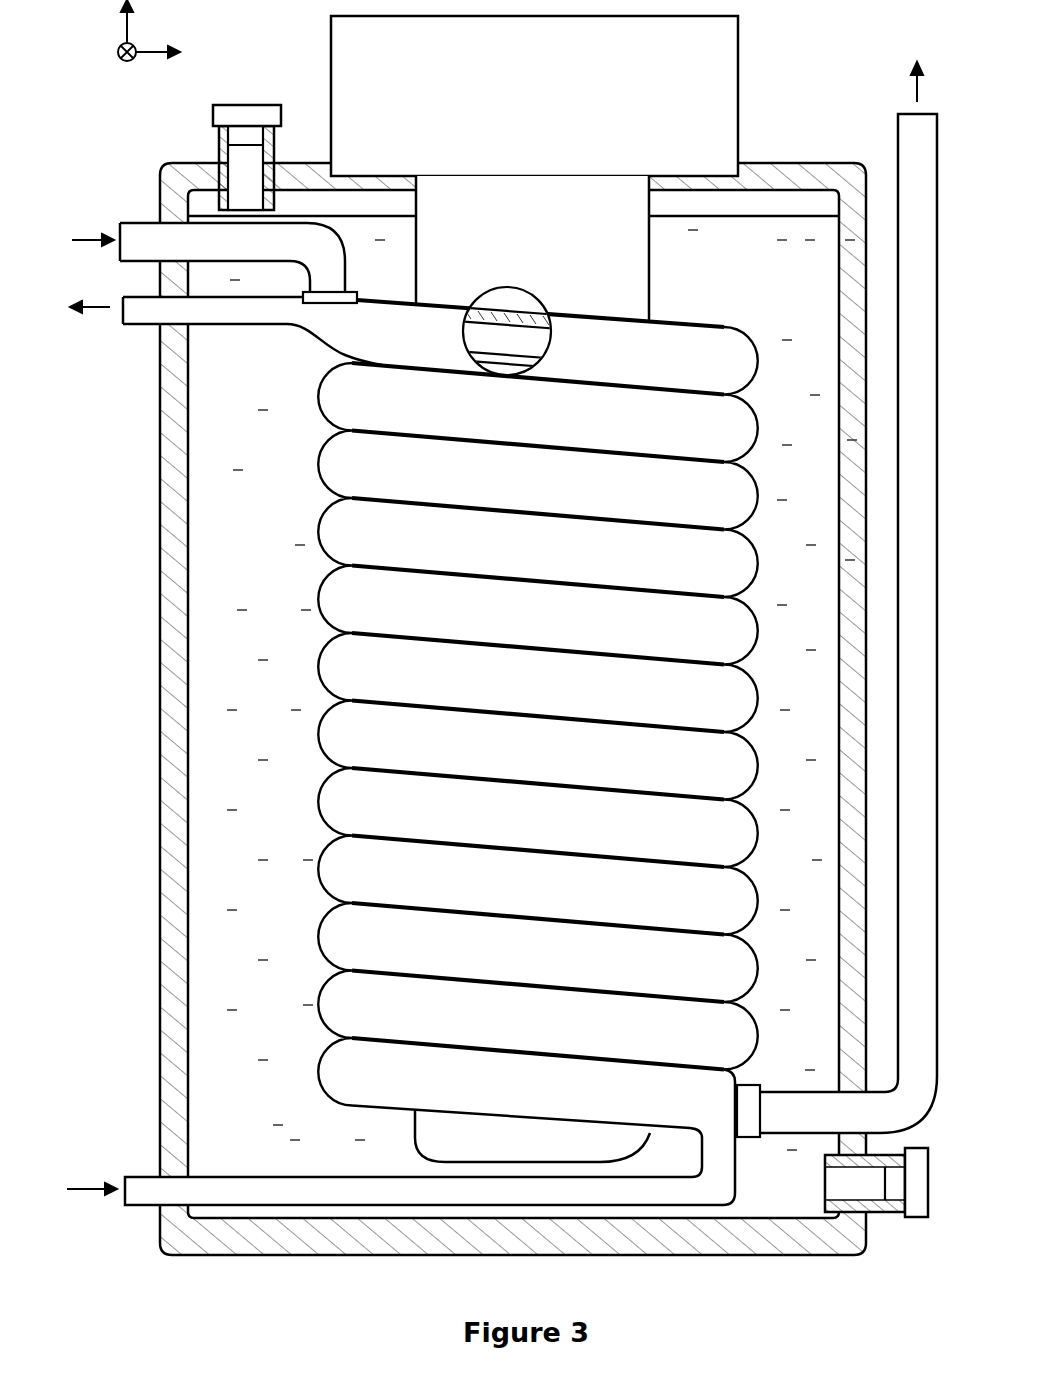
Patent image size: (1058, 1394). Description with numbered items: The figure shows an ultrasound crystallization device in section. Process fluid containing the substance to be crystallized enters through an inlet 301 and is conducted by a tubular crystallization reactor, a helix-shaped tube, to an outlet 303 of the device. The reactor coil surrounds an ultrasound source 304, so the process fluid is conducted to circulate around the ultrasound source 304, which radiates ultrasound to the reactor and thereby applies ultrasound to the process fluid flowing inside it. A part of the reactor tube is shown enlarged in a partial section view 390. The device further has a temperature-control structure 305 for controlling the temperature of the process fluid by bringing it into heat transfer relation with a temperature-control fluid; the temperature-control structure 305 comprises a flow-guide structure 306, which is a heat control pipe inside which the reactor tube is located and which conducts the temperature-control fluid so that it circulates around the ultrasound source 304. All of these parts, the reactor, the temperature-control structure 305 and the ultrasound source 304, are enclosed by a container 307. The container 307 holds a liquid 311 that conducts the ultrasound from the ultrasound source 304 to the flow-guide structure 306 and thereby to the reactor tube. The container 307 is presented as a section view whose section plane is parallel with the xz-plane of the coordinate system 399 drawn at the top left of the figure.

The coordinate system 399 is at (183, 35).
The inlet 301 is at (148, 222).
The temperature-control structure 305 is at (287, 325).
The ultrasound source 304 is at (550, 227).
The partial section view 390 is at (525, 310).
The flow-guide structure 306 is at (695, 318).
The outlet 303 is at (898, 137).
The container 307 is at (160, 615).
The liquid 311 is at (268, 584).